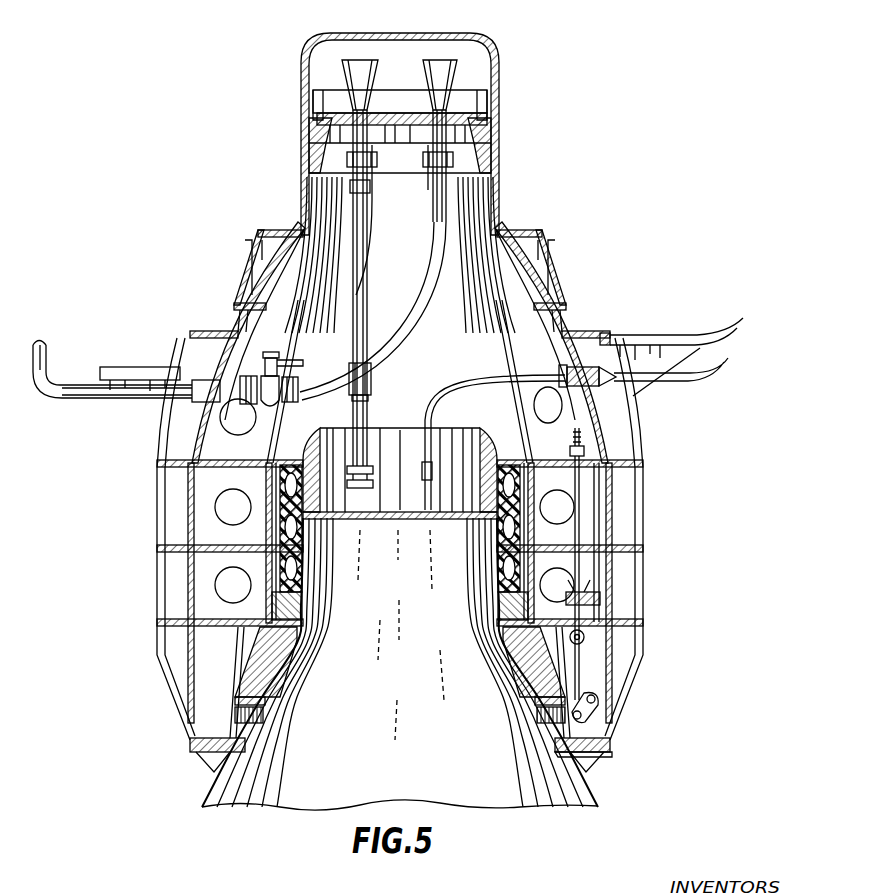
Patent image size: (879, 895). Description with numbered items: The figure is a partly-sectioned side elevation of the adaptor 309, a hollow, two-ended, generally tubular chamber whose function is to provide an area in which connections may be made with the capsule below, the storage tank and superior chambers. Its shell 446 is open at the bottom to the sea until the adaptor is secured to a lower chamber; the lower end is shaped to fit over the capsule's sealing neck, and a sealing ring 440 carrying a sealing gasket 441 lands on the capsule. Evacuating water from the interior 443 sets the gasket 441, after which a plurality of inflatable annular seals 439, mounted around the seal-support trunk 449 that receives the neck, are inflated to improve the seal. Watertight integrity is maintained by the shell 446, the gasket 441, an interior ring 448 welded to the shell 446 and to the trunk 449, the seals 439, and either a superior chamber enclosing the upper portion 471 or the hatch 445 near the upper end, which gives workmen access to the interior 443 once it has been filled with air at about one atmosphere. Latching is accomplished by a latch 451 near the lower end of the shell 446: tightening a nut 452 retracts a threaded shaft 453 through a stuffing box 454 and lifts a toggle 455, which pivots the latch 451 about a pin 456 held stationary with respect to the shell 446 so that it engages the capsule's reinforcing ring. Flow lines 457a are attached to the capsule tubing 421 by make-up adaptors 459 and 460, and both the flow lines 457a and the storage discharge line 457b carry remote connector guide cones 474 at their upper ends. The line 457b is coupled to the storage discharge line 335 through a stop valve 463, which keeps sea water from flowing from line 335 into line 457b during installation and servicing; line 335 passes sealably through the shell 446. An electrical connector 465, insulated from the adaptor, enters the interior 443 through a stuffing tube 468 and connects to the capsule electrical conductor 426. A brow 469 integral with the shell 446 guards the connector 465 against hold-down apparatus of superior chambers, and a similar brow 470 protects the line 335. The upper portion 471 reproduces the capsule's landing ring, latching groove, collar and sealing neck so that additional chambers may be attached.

The adaptor 309 is at (127, 683).
The storage discharge line 335 is at (90, 399).
The tubing 421 is at (362, 498).
The capsule electrical conductor 426 is at (452, 470).
The annular seals 439 is at (296, 562).
The sealing ring 440 is at (205, 740).
The sealing gasket 441 is at (604, 754).
The interior 443 is at (480, 361).
The hatch 445 is at (403, 112).
The shell 446 is at (612, 578).
The interior ring 448 is at (214, 620).
The seal-support trunk 449 is at (264, 538).
The latch 451 is at (565, 722).
The nut 452 is at (570, 506).
The threaded shaft 453 is at (572, 447).
The stuffing box 454 is at (584, 588).
The toggle 455 is at (582, 670).
The pin 456 is at (596, 700).
The flow lines 457a is at (357, 310).
The storage discharge line 457b is at (432, 286).
The make-up adaptor 459 is at (372, 382).
The make-up adaptor 460 is at (374, 480).
The stop valve 463 is at (272, 405).
The electrical connector 465 is at (445, 418).
The stuffing tube 468 is at (596, 372).
The brow 469 is at (718, 336).
The brow 470 is at (148, 368).
The upper portion 471 is at (558, 118).
The remote connector guide cones 474 is at (360, 62).